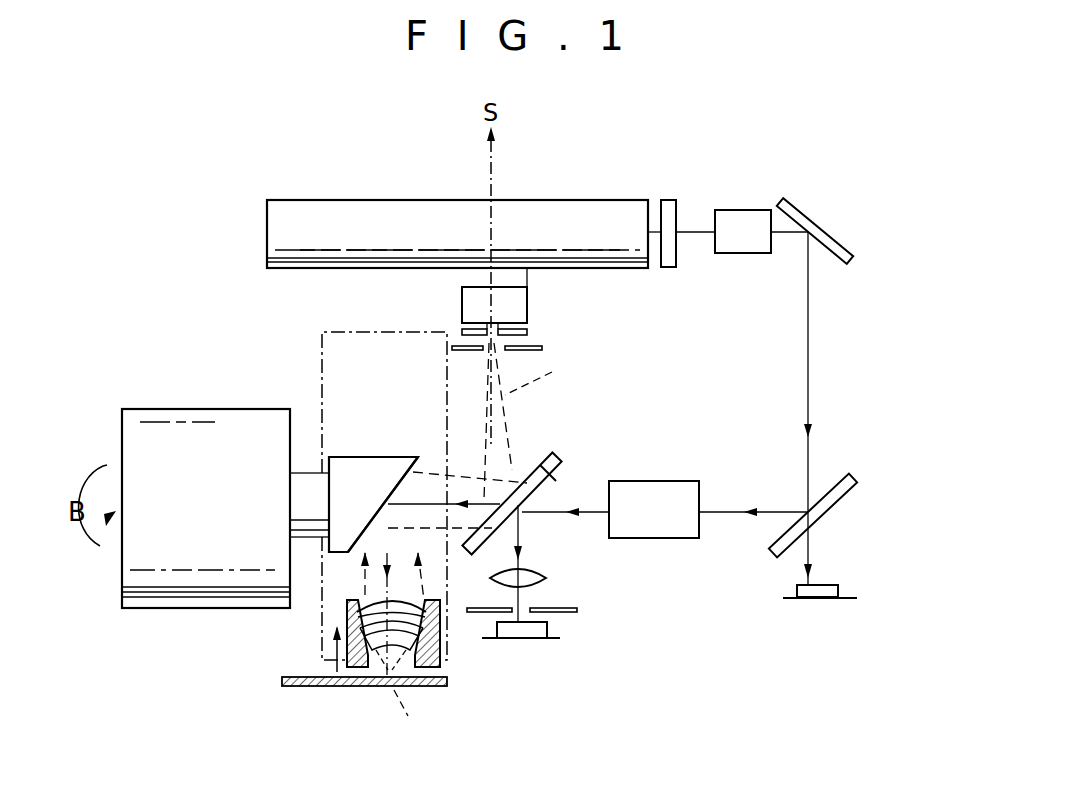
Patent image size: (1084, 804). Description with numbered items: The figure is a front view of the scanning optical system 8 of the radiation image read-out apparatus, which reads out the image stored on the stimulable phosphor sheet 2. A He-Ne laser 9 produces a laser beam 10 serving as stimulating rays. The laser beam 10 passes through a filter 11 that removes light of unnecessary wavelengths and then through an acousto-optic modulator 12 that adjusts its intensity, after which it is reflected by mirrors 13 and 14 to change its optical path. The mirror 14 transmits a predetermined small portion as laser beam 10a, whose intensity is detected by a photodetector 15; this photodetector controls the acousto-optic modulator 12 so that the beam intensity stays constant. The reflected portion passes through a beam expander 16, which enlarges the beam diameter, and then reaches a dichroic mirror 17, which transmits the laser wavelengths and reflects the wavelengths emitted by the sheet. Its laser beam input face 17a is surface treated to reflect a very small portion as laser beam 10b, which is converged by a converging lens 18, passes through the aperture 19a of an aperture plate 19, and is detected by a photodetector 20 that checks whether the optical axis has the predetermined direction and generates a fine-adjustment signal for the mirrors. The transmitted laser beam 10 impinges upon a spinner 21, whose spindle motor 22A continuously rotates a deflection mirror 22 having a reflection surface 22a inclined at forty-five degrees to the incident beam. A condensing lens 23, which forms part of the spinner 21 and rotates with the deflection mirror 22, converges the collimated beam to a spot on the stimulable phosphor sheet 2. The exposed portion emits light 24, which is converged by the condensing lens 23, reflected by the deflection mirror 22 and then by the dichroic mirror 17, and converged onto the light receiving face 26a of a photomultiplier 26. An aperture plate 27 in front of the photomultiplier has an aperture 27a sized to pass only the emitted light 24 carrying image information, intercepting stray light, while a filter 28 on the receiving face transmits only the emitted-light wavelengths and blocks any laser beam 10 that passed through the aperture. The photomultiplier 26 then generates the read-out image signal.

The stimulable phosphor sheet 2 is at (345, 687).
The scanning optical system 8 is at (233, 262).
The He-Ne laser 9 is at (470, 200).
The laser beam 10 is at (690, 232).
The laser beam transmitted through mirror 14 10a is at (818, 553).
The laser beam reflected by laser beam input face 10b is at (527, 530).
The filter 11 is at (668, 200).
The acousto-optic modulator 12 is at (755, 210).
The mirror 13 is at (843, 248).
The mirror 14 is at (848, 498).
The photodetector 15 is at (828, 600).
The beam expander 16 is at (682, 481).
The dichroic mirror 17 is at (547, 462).
The laser beam input face 17a is at (560, 485).
The converging lens 18 is at (546, 586).
The aperture plate 19 is at (577, 611).
The aperture 19a is at (532, 617).
The photodetector 20 is at (526, 638).
The spinner 21 is at (250, 388).
The deflection mirror 22 is at (346, 483).
The reflection surface 22a is at (412, 473).
The spindle motor 22A is at (210, 590).
The condensing lens 23 is at (445, 632).
The emitted light 24 is at (490, 549).
The photomultiplier 26 is at (530, 275).
The light receiving face 26a is at (540, 337).
The aperture plate 27 is at (545, 347).
The aperture 27a is at (480, 340).
The filter 28 is at (512, 333).